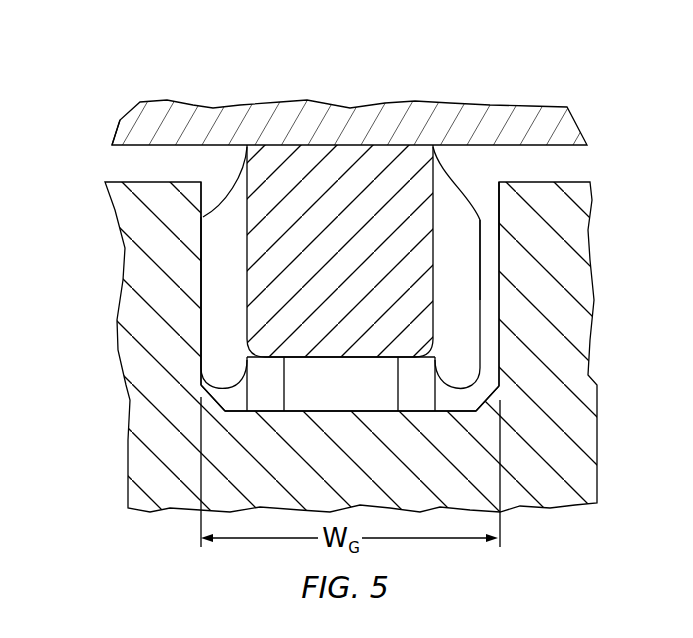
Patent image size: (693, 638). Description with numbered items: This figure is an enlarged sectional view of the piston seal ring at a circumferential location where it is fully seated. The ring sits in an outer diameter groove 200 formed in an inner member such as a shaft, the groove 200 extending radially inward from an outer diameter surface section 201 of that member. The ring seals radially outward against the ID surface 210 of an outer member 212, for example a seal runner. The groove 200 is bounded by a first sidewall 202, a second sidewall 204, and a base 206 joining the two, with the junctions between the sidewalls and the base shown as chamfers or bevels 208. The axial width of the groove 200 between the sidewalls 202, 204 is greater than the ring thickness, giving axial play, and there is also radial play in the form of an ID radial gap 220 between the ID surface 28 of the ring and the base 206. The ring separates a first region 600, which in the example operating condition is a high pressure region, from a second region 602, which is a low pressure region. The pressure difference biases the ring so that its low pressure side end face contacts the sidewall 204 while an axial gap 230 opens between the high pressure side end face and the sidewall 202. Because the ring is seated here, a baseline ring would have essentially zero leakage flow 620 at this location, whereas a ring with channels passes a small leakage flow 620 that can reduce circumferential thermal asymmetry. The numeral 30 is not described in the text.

The piston 30 is at (350, 98).
The outer member 212 is at (198, 125).
The ID surface 210 is at (112, 146).
The outer diameter surface section 201 is at (580, 182).
The first sidewall 202 is at (498, 292).
The second sidewall 204 is at (199, 303).
The outer diameter groove 200 is at (270, 318).
The second region 602 is at (224, 217).
The first region 600 is at (471, 172).
The leakage flow 620 is at (455, 218).
The base 206 is at (340, 411).
The ID surface 28 is at (387, 359).
The chamfers 208 is at (228, 390).
The ID radial gap 220 is at (371, 422).
The axial gap 230 is at (497, 378).